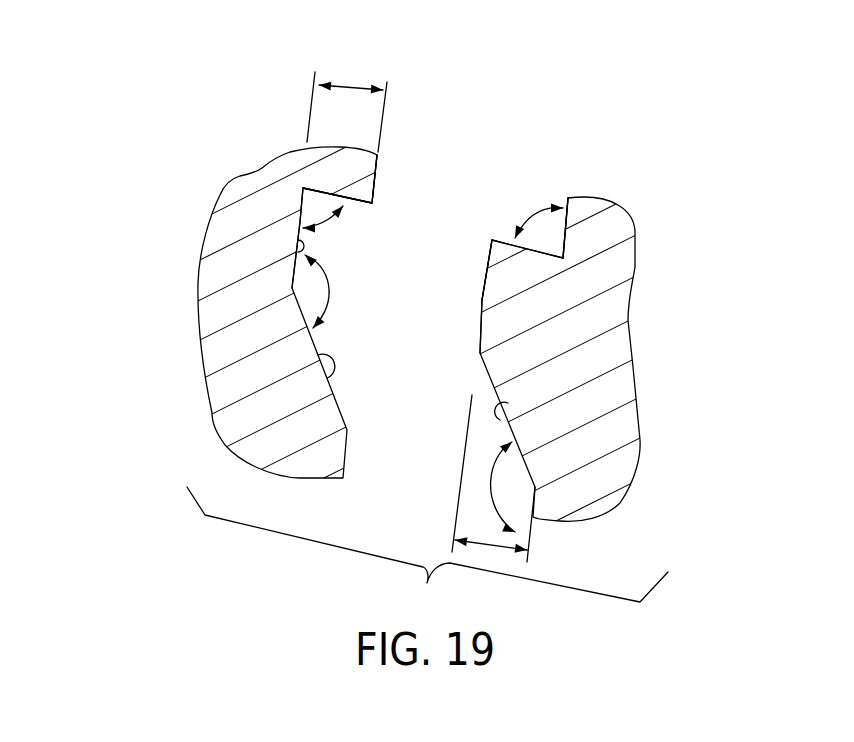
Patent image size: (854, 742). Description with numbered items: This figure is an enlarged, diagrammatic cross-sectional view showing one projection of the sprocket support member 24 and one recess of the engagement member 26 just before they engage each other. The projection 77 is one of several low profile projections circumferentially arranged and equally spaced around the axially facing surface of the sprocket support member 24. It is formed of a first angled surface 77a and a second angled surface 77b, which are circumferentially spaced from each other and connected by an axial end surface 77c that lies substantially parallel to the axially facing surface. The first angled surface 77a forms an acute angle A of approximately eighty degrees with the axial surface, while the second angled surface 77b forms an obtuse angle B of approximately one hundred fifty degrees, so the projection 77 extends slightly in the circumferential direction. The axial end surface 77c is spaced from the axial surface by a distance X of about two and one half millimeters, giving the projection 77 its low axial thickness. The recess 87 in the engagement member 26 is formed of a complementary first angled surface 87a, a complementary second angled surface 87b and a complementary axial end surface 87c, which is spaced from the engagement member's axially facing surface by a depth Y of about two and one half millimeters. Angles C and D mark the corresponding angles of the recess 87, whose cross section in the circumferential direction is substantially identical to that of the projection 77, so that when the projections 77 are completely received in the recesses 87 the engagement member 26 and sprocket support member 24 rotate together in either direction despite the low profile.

The sprocket support member 24 is at (622, 200).
The engagement member 26 is at (250, 172).
The projection 77 is at (485, 240).
The first angled surface 77a is at (567, 233).
The second angled surface 77b is at (508, 422).
The axial end surface 77c is at (483, 292).
The recess 87 is at (337, 250).
The complementary first angled surface 87a is at (353, 198).
The complementary second angled surface 87b is at (333, 380).
The complementary axial end surface 87c is at (297, 252).
The acute angle A is at (530, 213).
The obtuse angle B is at (492, 453).
The tooth angle C is at (330, 220).
The tooth angle D is at (332, 288).
The axial thickness X is at (500, 552).
The axial depth Y is at (351, 103).